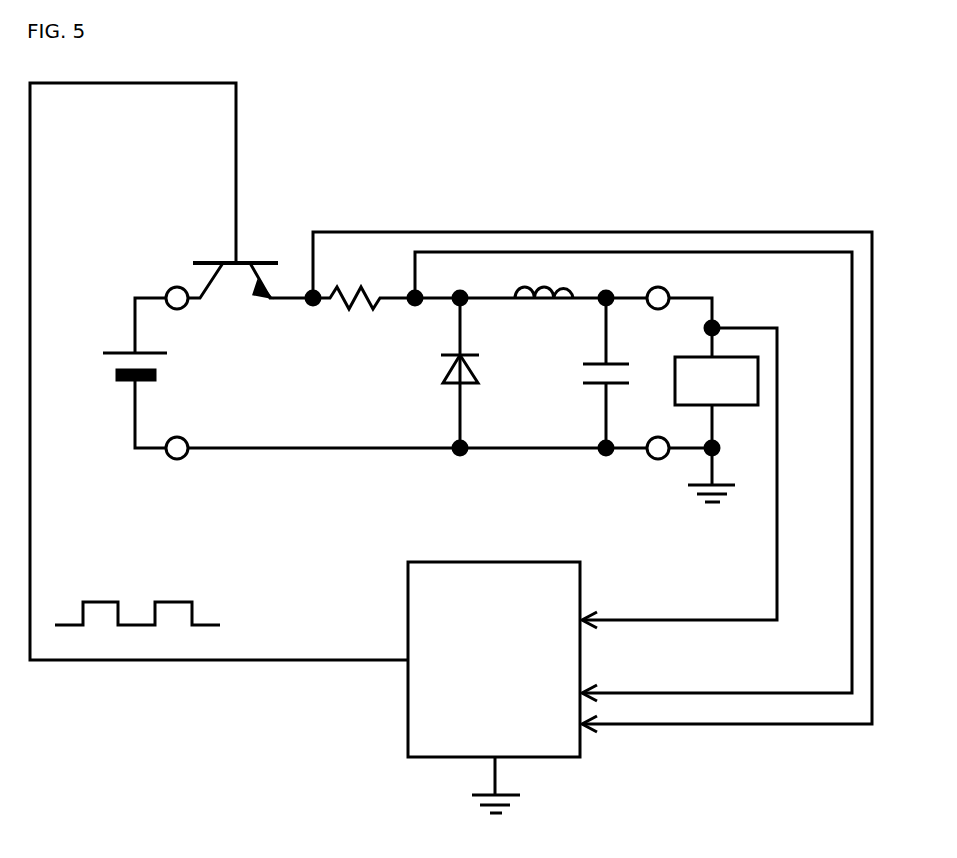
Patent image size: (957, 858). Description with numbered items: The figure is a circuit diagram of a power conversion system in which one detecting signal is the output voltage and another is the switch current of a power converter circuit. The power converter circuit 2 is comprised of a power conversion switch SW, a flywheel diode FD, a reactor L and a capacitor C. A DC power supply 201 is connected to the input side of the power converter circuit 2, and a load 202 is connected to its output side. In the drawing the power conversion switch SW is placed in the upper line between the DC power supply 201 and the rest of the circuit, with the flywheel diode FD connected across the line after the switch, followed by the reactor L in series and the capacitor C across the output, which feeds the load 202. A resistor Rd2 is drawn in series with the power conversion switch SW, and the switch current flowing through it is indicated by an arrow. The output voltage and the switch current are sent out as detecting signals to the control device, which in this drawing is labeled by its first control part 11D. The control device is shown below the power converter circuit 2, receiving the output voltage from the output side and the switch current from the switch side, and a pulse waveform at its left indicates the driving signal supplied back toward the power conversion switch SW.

The power converter circuit 2 is at (588, 128).
The DC power supply 201 is at (115, 368).
The load 202 is at (672, 398).
The first control part 11D is at (455, 560).
The power conversion switch SW is at (187, 275).
The resistor Rd2 is at (380, 330).
The flywheel diode FD is at (437, 370).
The reactor L is at (524, 315).
The capacitor C is at (575, 372).